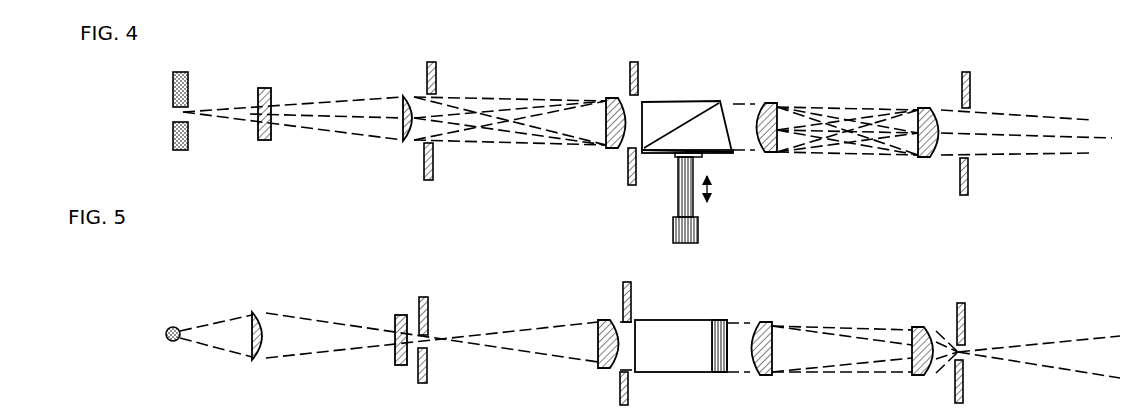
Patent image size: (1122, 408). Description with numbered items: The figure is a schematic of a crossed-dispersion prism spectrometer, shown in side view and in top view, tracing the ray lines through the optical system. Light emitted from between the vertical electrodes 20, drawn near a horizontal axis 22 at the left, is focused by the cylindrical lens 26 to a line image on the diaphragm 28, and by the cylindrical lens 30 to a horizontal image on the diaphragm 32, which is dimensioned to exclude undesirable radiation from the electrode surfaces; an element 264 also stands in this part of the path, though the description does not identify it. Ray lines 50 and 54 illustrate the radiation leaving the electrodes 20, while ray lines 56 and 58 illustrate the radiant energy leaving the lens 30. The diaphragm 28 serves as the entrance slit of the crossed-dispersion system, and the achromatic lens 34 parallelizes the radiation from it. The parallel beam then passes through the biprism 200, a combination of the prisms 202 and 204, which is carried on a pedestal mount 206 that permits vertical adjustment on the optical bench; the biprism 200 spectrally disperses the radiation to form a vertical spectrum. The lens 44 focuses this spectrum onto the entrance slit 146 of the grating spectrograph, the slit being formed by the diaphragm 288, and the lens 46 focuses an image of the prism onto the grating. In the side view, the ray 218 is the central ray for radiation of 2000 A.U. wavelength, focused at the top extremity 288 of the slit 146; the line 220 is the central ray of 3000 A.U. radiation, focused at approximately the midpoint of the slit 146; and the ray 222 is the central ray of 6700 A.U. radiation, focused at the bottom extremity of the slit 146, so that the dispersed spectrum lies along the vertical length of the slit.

In FIG. 4, the vertical electrodes 20 is at (188, 140).
In FIG. 5, the vertical electrodes 20 is at (176, 327).
In FIG. 4, the horizontal axis 22 is at (185, 112).
In FIG. 5, the cylindrical lens 26 is at (262, 312).
In FIG. 4, the diaphragm 28 is at (437, 76).
In FIG. 5, the diaphragm 28 is at (428, 305).
In FIG. 4, the cylindrical lens 30 is at (403, 138).
In FIG. 5, the cylindrical lens 30 is at (400, 315).
In FIG. 4, the diaphragm 32 is at (630, 172).
In FIG. 5, the diaphragm 32 is at (631, 300).
In FIG. 4, the achromatic lens 34 is at (626, 102).
In FIG. 5, the achromatic lens 34 is at (604, 320).
In FIG. 4, the lens 44 is at (770, 104).
In FIG. 5, the lens 44 is at (762, 322).
In FIG. 4, the lens 46 is at (925, 108).
In FIG. 5, the lens 46 is at (920, 328).
In FIG. 4, the ray line 50 is at (326, 128).
In FIG. 4, the ray line 54 is at (328, 102).
In FIG. 4, the ray line 56 is at (552, 138).
In FIG. 4, the ray line 58 is at (550, 104).
In FIG. 4, the entrance slit 146 is at (964, 142).
In FIG. 5, the entrance slit 146 is at (957, 354).
In FIG. 4, the biprism 200 is at (708, 123).
In FIG. 5, the biprism 200 is at (680, 316).
In FIG. 4, the prism 202 is at (680, 105).
In FIG. 4, the prism 204 is at (712, 132).
In FIG. 4, the pedestal mount 206 is at (711, 206).
In FIG. 4, the central ray 218 is at (1048, 118).
In FIG. 4, the central ray 220 is at (1057, 138).
In FIG. 4, the central ray 222 is at (1037, 155).
In FIG. 4, the filter plate 264 is at (268, 88).
In FIG. 4, the diaphragm 288 is at (970, 92).
In FIG. 5, the diaphragm 288 is at (965, 314).
In FIG. 4, the 2000 A.U. wavelength 2000 is at (998, 109).
In FIG. 4, the 3000 A.U. wavelength 3000 is at (998, 129).
In FIG. 4, the 6700 A.U. wavelength 6700 is at (998, 165).